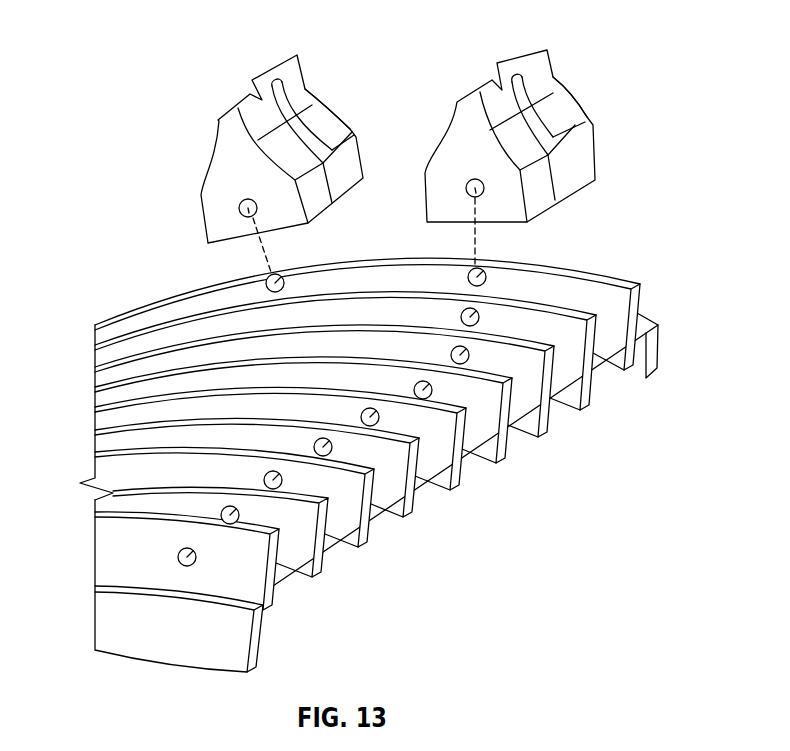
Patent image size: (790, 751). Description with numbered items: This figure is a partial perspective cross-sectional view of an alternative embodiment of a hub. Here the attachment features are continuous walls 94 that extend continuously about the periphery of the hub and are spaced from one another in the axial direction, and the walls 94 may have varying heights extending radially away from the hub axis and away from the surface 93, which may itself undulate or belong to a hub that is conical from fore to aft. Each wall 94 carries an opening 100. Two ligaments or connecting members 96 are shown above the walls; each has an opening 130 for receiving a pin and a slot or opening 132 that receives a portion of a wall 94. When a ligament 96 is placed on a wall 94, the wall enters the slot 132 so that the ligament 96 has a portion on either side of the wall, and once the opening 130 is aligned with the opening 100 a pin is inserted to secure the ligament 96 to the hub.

The surface 93 is at (570, 397).
The attachment features or walls 94 is at (176, 323).
The ligaments or connecting members 96 is at (291, 98).
The opening 100 is at (325, 455).
The opening 130 is at (241, 209).
The slot or opening 132 is at (318, 147).